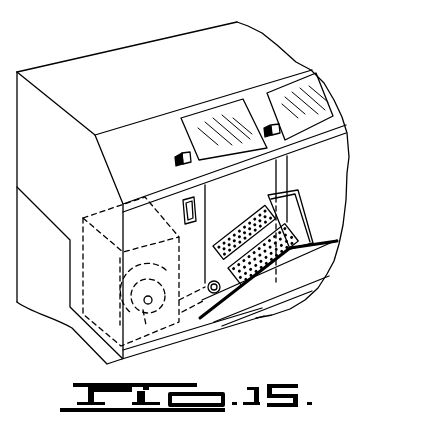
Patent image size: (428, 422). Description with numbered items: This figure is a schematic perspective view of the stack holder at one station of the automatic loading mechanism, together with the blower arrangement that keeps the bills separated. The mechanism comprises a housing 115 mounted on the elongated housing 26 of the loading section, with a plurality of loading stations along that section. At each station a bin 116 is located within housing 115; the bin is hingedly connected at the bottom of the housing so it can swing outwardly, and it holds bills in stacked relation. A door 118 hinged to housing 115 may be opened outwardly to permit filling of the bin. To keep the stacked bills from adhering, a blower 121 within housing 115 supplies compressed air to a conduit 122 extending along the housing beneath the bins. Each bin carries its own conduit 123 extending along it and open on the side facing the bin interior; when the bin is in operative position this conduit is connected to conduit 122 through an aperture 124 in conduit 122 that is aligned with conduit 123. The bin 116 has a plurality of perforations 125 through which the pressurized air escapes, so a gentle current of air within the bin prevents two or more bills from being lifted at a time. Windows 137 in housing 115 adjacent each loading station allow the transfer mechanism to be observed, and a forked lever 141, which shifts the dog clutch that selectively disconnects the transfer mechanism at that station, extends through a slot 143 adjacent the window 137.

The housing 115 is at (68, 61).
The window 137 is at (327, 98).
The forked lever 141 is at (179, 156).
The slot 143 is at (178, 160).
The bin 116 is at (300, 196).
The perforations 125 is at (276, 212).
The door 118 is at (338, 243).
The conduit 123 is at (313, 291).
The aperture 124 is at (258, 317).
The conduit 122 is at (214, 333).
The blower 121 is at (153, 351).
The housing 26 is at (52, 305).